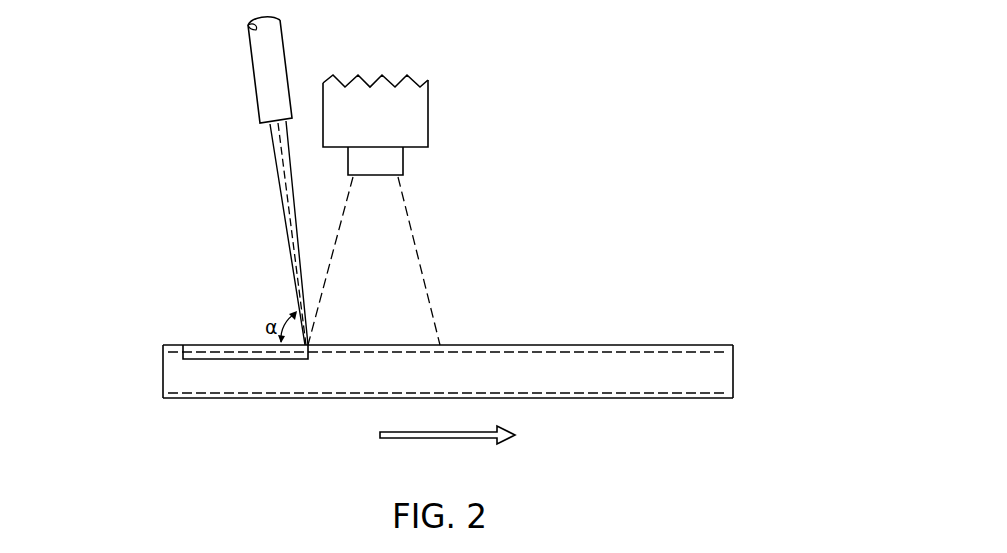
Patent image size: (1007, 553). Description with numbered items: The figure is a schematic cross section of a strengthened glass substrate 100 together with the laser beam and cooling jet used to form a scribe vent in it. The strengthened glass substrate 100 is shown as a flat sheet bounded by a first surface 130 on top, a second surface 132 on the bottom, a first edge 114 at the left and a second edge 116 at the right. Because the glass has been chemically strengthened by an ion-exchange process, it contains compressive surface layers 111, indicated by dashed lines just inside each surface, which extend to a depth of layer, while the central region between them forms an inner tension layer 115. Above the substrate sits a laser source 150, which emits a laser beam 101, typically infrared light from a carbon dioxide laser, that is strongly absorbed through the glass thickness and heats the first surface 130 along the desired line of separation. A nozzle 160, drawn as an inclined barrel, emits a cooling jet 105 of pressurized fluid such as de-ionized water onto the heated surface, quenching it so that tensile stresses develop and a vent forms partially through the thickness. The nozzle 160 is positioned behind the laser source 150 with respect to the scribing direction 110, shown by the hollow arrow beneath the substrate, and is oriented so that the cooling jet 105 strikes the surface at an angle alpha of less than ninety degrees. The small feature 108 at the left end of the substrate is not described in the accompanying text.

The strengthened glass substrate 100 is at (591, 321).
The laser beam 101 is at (412, 232).
The cooling jet 105 is at (282, 200).
The deposited material / contact region 108 is at (253, 361).
The scribing direction 110 is at (447, 440).
The compressive surface layers 111 is at (553, 348).
The first edge 114 is at (163, 373).
The inner tension layer 115 is at (693, 381).
The second edge 116 is at (734, 370).
The first surface 130 is at (700, 346).
The second surface 132 is at (316, 399).
The laser source 150 is at (429, 131).
The nozzle 160 is at (256, 82).